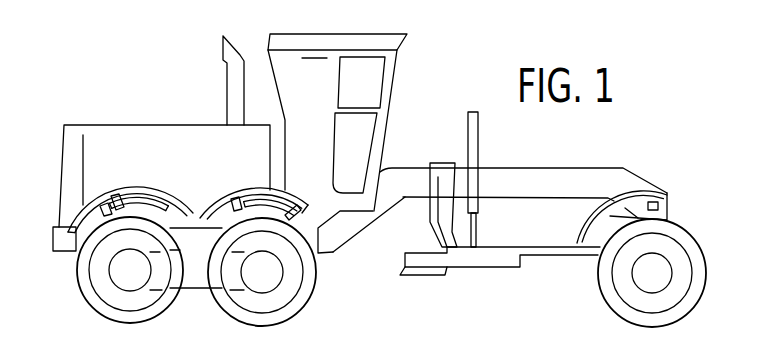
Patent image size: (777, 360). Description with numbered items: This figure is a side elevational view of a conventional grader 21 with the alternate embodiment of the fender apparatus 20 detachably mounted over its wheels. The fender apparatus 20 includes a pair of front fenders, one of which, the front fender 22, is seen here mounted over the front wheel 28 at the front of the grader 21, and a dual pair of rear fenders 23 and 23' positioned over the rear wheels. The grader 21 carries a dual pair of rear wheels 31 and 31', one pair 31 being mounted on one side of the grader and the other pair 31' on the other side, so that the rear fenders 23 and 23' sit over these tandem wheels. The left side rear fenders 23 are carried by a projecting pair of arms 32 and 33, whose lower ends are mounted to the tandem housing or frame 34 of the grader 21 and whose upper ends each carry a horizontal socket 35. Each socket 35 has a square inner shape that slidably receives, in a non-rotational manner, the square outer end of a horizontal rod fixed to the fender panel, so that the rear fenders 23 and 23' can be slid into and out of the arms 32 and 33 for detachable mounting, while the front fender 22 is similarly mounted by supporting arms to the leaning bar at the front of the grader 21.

The fender apparatus 20 is at (648, 140).
The grader 21 is at (574, 165).
The front fender 22 is at (682, 201).
The rear fender 23 is at (254, 185).
The rear fender 23' is at (130, 188).
The front wheel 28 is at (701, 307).
The rear wheels 31 is at (213, 272).
The rear wheels 31' is at (213, 288).
The arm 32 is at (73, 251).
The arm 33 is at (345, 246).
The tandem housing 34 is at (196, 282).
The horizontal socket 35 is at (98, 201).